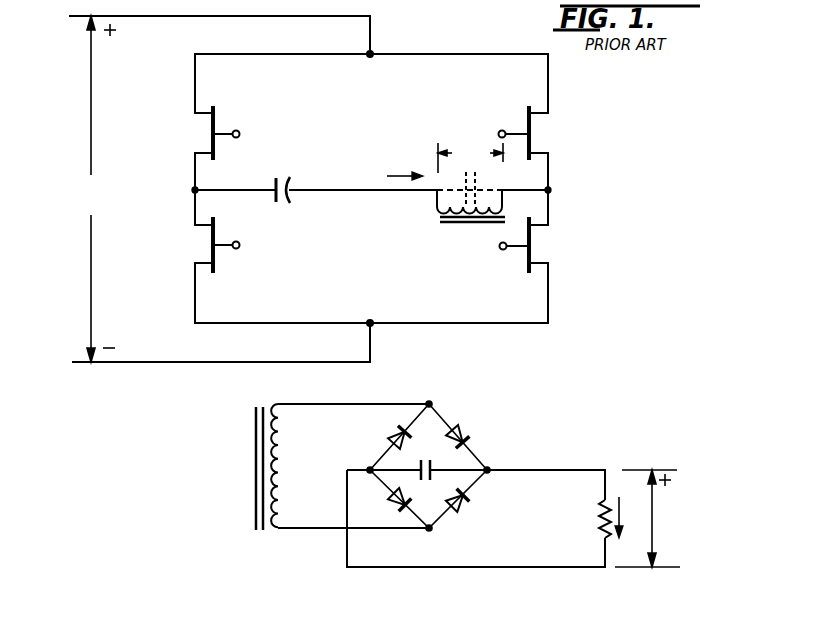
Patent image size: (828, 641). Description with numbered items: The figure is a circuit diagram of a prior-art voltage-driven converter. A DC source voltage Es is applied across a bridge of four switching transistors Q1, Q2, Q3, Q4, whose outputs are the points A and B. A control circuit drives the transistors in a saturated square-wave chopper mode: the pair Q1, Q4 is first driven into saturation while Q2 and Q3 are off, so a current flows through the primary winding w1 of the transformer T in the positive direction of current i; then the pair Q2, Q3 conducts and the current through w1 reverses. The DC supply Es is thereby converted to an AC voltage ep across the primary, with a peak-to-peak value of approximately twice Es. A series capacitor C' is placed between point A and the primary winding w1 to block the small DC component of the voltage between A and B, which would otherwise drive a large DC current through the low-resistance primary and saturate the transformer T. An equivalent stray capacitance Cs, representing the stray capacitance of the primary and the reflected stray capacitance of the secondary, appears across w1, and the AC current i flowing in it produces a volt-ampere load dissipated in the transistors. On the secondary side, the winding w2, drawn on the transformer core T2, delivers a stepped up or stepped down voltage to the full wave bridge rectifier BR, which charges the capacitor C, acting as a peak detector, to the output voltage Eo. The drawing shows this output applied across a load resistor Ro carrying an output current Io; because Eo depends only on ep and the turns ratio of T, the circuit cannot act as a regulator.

The source voltage Es is at (98, 189).
The switching transistor Q1 is at (208, 133).
The switching transistor Q2 is at (535, 133).
The switching transistor Q3 is at (208, 245).
The switching transistor Q4 is at (536, 245).
The point A is at (183, 191).
The point B is at (557, 192).
The series capacitor C' is at (284, 177).
The equivalent capacitance Cs is at (469, 187).
The primary winding w1 is at (453, 202).
The transformer T is at (459, 225).
The transformer core (secondary side) T2 is at (258, 480).
The current i is at (405, 167).
The AC voltage ep is at (470, 158).
The secondary winding w2 is at (279, 481).
The full wave bridge rectifier BR is at (478, 423).
The capacitor C is at (428, 461).
The load resistor Ro is at (598, 512).
The output current Io is at (625, 517).
The output voltage Eo is at (647, 518).